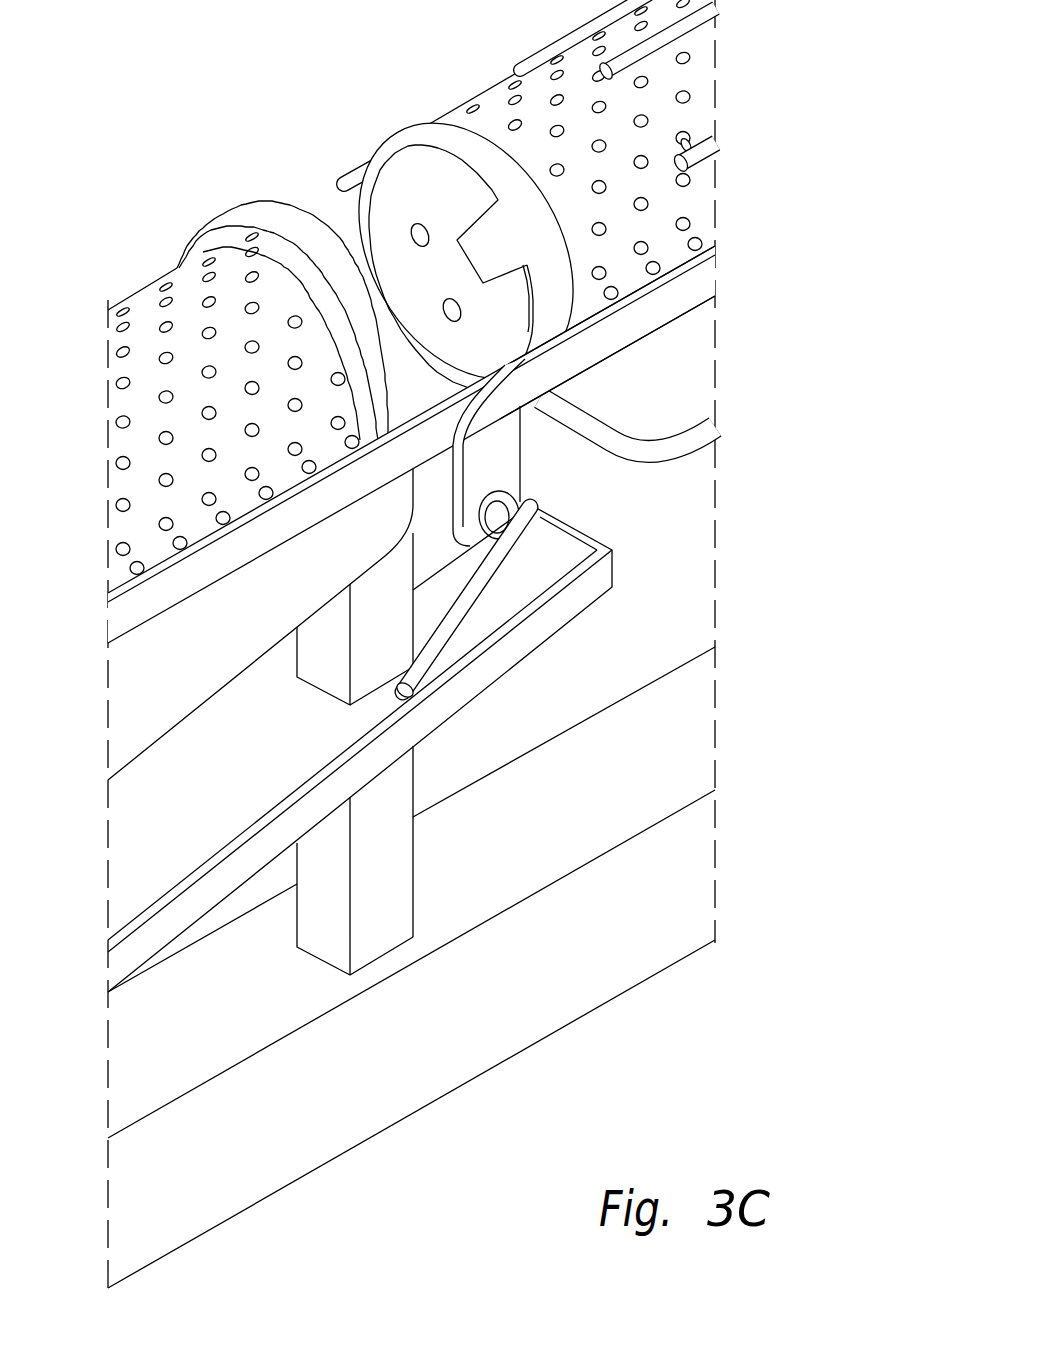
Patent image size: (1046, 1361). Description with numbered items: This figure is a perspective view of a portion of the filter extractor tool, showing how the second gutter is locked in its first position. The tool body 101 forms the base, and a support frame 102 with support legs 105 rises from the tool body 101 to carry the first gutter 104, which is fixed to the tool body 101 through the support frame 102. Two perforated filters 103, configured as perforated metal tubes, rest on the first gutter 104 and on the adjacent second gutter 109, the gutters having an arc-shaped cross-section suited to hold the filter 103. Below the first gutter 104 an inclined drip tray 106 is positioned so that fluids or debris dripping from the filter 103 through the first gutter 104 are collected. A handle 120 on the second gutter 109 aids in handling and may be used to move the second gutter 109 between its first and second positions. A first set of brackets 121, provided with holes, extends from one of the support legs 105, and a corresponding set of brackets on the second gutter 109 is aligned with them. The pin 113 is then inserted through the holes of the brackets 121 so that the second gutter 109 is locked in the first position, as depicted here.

The tool body 101 is at (338, 1154).
The support frame 102 is at (145, 744).
The filter 103 is at (486, 87).
The first gutter 104 is at (177, 597).
The support legs 105 is at (406, 868).
The drip tray 106 is at (507, 653).
The second gutter 109 is at (640, 328).
The pin 113 is at (500, 495).
The handle 120 is at (646, 460).
The first set of brackets 121 is at (438, 508).